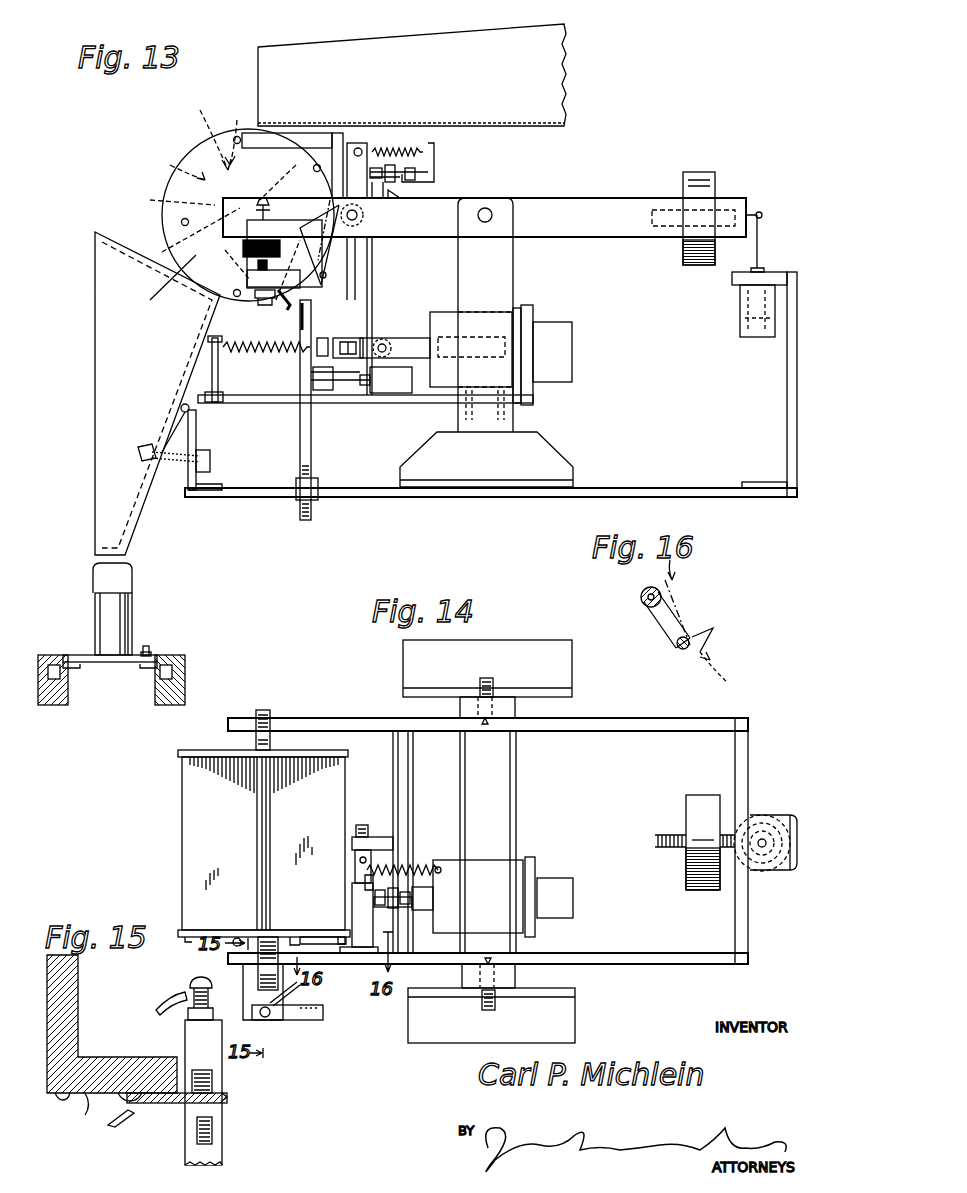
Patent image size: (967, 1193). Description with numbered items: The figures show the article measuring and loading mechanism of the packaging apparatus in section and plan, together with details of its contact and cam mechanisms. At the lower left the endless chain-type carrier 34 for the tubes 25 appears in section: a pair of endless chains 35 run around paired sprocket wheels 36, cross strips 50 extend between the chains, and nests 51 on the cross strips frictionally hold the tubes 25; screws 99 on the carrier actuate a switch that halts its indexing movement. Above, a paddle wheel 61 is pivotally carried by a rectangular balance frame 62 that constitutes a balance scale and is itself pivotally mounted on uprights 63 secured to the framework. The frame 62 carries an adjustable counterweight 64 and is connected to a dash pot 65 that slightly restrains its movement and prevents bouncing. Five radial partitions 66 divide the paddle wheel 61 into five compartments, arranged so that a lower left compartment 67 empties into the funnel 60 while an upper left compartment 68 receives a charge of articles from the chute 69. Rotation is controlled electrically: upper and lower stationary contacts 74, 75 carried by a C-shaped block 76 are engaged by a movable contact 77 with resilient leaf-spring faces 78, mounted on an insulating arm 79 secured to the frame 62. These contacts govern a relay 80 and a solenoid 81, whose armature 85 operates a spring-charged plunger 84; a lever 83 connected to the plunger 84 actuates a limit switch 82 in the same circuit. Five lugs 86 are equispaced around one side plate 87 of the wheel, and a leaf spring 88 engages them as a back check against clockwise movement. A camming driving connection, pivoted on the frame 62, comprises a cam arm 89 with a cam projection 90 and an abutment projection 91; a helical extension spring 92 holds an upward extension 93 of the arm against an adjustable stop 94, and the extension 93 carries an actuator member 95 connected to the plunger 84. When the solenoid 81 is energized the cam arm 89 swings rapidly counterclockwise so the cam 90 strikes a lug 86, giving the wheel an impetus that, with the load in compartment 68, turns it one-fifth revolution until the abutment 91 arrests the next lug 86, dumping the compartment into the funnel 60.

In FIG. 14, the package or tube 25 is at (125, 583).
In FIG. 14, the endless chain-type carrier 34 is at (116, 692).
In FIG. 14, the endless chain 35 is at (175, 678).
In FIG. 14, the sprocket wheel 36 is at (60, 680).
In FIG. 14, the cross strip 50 is at (115, 665).
In FIG. 14, the nest 51 is at (143, 626).
In FIG. 13, the funnel 60 is at (105, 300).
In FIG. 13, the paddle wheel 61 is at (215, 152).
In FIG. 14, the paddle wheel 61 is at (210, 752).
In FIG. 13, the balance frame 62 is at (580, 198).
In FIG. 14, the balance frame 62 is at (365, 718).
In FIG. 15, the balance frame 62 is at (75, 1025).
In FIG. 13, the upright 63 is at (505, 282).
In FIG. 14, the upright 63 is at (503, 700).
In FIG. 13, the counterweight 64 is at (680, 172).
In FIG. 14, the counterweight 64 is at (676, 818).
In FIG. 13, the dash pot 65 is at (730, 343).
In FIG. 14, the dash pot 65 is at (770, 808).
In FIG. 13, the radial partition 66 is at (315, 270).
In FIG. 14, the radial partition 66 is at (318, 790).
In FIG. 13, the lower left compartment 67 is at (171, 197).
In FIG. 13, the upper left compartment 68 is at (204, 130).
In FIG. 14, the upper left compartment 68 is at (195, 821).
In FIG. 13, the chute 69 is at (440, 125).
In FIG. 13, the upper stationary electric contact 74 is at (245, 235).
In FIG. 15, the upper stationary electric contact 74 is at (215, 1080).
In FIG. 13, the lower stationary electric contact 75 is at (263, 286).
In FIG. 15, the lower stationary electric contact 75 is at (212, 1135).
In FIG. 13, the C-shaped block 76 is at (310, 232).
In FIG. 14, the C-shaped block 76 is at (312, 1022).
In FIG. 15, the C-shaped block 76 is at (190, 1043).
In FIG. 13, the movable contact 77 is at (240, 255).
In FIG. 14, the movable contact 77 is at (279, 1026).
In FIG. 15, the movable contact 77 is at (240, 1108).
In FIG. 15, the leaf-spring face 78 is at (222, 1095).
In FIG. 14, the insulating arm 79 is at (252, 978).
In FIG. 15, the insulating arm 79 is at (90, 1098).
In FIG. 13, the electric relay 80 is at (560, 338).
In FIG. 14, the electric relay 80 is at (560, 882).
In FIG. 13, the solenoid 81 is at (445, 318).
In FIG. 14, the solenoid 81 is at (485, 868).
In FIG. 13, the limit switch 82 is at (385, 380).
In FIG. 13, the lever 83 is at (355, 395).
In FIG. 13, the spring-charged plunger 84 is at (348, 312).
In FIG. 13, the armature 85 is at (420, 340).
In FIG. 14, the armature 85 is at (420, 910).
In FIG. 13, the lug 86 is at (237, 298).
In FIG. 14, the lug 86 is at (238, 938).
In FIG. 16, the lug 86 is at (682, 650).
In FIG. 13, the side plate 87 is at (205, 268).
In FIG. 14, the side plate 87 is at (210, 925).
In FIG. 13, the leaf spring 88 is at (285, 140).
In FIG. 14, the leaf spring 88 is at (290, 936).
In FIG. 13, the cam arm 89 is at (334, 242).
In FIG. 16, the cam arm 89 is at (683, 612).
In FIG. 13, the cam projection 90 is at (330, 245).
In FIG. 16, the cam projection 90 is at (700, 616).
In FIG. 13, the abutment or stop projection 91 is at (330, 268).
In FIG. 16, the abutment or stop projection 91 is at (676, 640).
In FIG. 13, the helical extension spring 92 is at (395, 150).
In FIG. 14, the helical extension spring 92 is at (422, 866).
In FIG. 13, the upward extension 93 is at (355, 145).
In FIG. 14, the upward extension 93 is at (358, 896).
In FIG. 13, the adjustable stop 94 is at (378, 185).
In FIG. 13, the actuator member 95 is at (368, 280).
In FIG. 14, the screw 99 is at (150, 650).